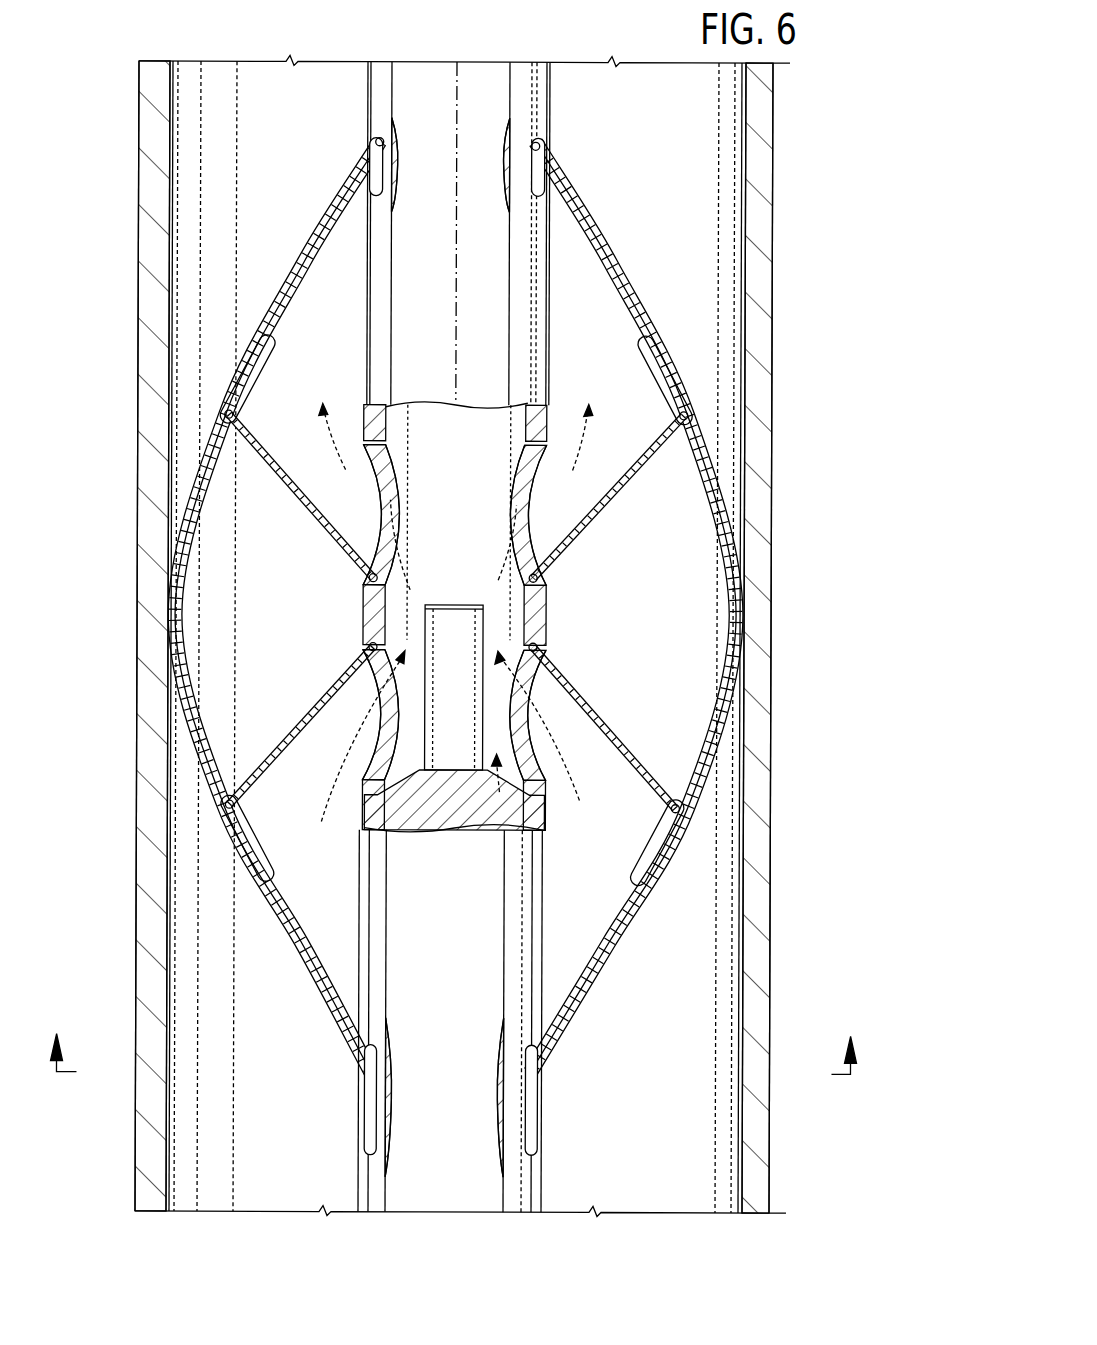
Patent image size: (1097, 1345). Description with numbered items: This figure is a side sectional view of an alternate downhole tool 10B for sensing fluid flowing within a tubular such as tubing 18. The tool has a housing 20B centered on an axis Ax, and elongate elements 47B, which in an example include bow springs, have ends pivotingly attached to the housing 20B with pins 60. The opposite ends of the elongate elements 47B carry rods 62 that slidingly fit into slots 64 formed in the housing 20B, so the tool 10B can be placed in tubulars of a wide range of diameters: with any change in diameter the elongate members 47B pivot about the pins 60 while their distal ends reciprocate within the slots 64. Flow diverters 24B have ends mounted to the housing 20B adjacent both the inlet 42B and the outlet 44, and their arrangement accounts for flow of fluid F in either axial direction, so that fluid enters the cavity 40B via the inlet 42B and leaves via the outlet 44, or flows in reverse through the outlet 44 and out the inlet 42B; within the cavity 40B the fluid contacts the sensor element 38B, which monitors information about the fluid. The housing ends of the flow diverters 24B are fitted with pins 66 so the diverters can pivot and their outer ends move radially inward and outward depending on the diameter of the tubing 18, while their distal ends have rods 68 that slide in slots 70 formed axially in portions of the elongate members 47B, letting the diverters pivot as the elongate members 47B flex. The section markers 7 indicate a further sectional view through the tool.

The downhole tool 10B is at (662, 195).
The tubing 18 is at (762, 250).
The housing 20B is at (550, 98).
The flow diverters 24B is at (617, 736).
The sensor element 38B is at (453, 738).
The cavity 40B is at (477, 525).
The inlet 42B is at (533, 808).
The outlet 44 is at (542, 523).
The elongate elements 47B is at (605, 990).
The pins 60 is at (372, 147).
The rods 62 is at (366, 1075).
The slots 64 is at (366, 1140).
The pins 66 is at (545, 633).
The rods 68 is at (226, 808).
The slots 70 is at (265, 868).
The axis Ax is at (457, 258).
The fluid flow F is at (322, 790).
The section line 7- 7 is at (452, 1039).